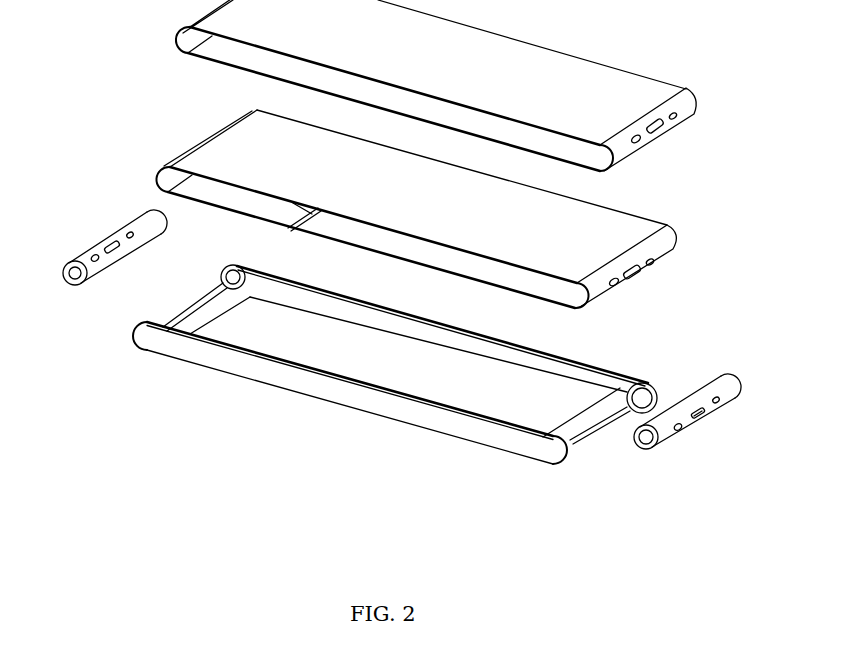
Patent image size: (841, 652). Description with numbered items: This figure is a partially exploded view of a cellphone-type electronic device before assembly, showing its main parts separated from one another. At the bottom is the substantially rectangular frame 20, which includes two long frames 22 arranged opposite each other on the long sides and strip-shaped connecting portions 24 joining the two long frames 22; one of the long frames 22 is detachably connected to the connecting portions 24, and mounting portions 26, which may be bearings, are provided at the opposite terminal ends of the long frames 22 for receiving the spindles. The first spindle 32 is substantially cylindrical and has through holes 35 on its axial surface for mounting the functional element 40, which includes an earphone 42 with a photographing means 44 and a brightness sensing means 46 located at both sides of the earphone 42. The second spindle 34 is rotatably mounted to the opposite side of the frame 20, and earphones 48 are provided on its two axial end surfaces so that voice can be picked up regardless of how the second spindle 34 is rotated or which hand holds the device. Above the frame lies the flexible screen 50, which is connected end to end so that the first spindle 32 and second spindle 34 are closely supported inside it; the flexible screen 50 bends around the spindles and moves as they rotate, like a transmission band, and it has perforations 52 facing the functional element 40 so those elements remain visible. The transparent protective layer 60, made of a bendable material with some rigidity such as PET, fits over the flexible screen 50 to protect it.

The frame 20 is at (578, 538).
The long frame 22 is at (487, 435).
The connecting portion 24 is at (593, 430).
The mounting portion 26 is at (645, 386).
The first spindle 32 is at (733, 378).
The second spindle 34 is at (68, 272).
The through hole 35 is at (700, 408).
The functional element 40 is at (777, 437).
The earphone 42 is at (700, 417).
The photographing means 44 is at (680, 427).
The brightness sensing means 46 is at (717, 402).
The earphone 48 is at (143, 227).
The flexible screen 50 is at (620, 232).
The perforation 52 is at (646, 277).
The transparent protective layer 60 is at (610, 87).